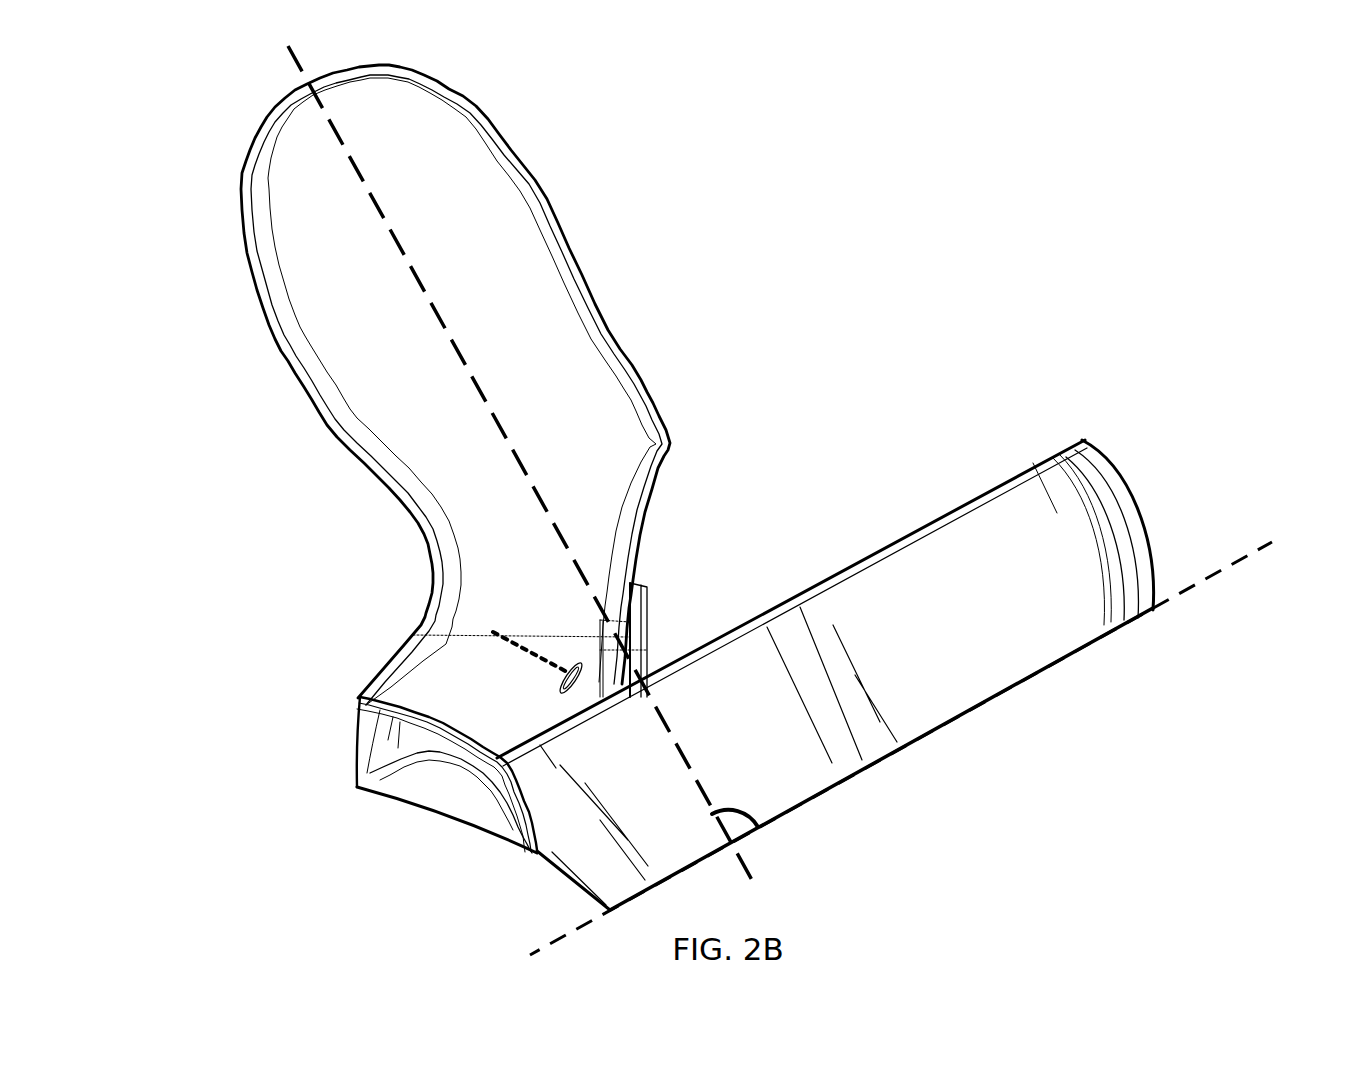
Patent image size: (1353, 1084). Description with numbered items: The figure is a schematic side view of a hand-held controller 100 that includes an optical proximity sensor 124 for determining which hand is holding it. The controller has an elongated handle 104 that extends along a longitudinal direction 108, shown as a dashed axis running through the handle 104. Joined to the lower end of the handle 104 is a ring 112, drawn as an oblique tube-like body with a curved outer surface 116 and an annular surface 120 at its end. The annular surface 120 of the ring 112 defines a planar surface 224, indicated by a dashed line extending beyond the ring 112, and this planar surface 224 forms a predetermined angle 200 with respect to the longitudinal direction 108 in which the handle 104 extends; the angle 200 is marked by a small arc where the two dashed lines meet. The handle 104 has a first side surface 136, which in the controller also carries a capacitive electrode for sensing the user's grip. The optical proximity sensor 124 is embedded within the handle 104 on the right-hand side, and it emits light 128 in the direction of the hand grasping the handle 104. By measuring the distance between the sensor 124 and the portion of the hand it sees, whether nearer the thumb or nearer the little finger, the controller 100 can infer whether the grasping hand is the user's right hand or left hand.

The hand-held controller 100 is at (848, 285).
The handle 104 is at (365, 384).
The longitudinal direction 108 is at (340, 137).
The ring 112 is at (920, 740).
The curved outer surface 116 is at (952, 657).
The annular surface 120 is at (1133, 623).
The optical proximity sensor 124 is at (587, 640).
The light 128 is at (541, 664).
The first side surface 136 is at (489, 609).
The predetermined angle 200 is at (723, 792).
The planar surface 224 is at (1230, 560).